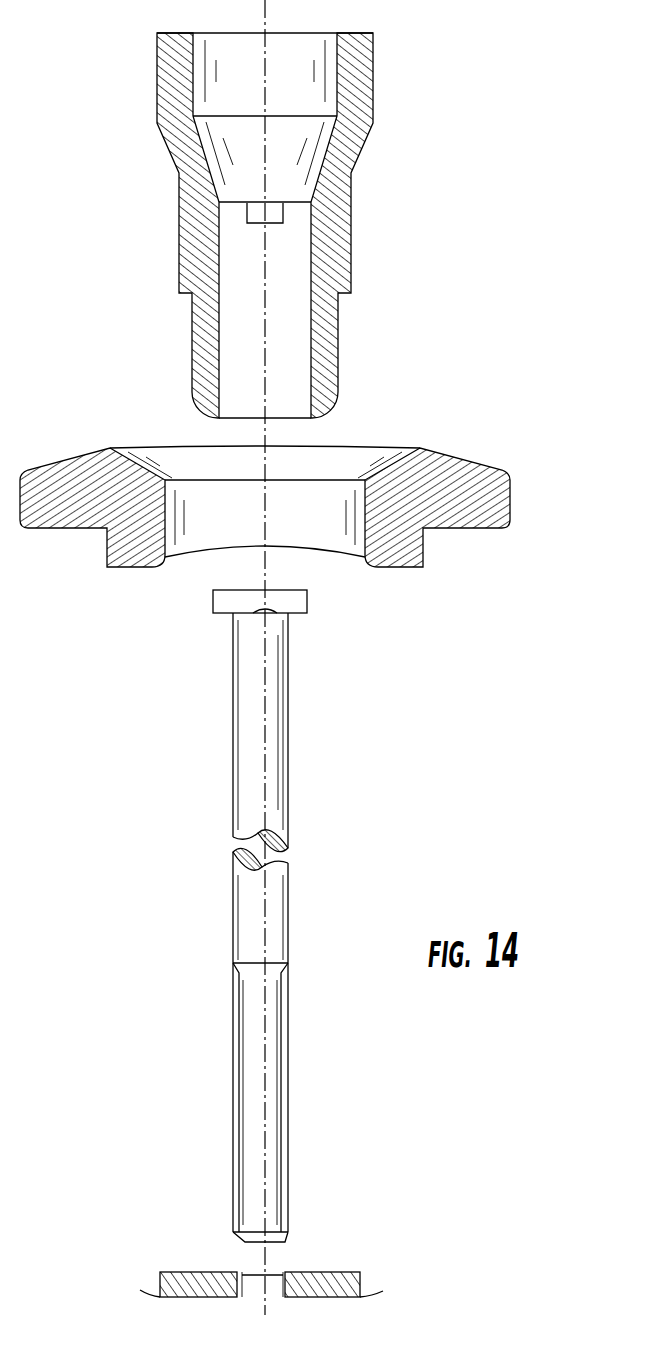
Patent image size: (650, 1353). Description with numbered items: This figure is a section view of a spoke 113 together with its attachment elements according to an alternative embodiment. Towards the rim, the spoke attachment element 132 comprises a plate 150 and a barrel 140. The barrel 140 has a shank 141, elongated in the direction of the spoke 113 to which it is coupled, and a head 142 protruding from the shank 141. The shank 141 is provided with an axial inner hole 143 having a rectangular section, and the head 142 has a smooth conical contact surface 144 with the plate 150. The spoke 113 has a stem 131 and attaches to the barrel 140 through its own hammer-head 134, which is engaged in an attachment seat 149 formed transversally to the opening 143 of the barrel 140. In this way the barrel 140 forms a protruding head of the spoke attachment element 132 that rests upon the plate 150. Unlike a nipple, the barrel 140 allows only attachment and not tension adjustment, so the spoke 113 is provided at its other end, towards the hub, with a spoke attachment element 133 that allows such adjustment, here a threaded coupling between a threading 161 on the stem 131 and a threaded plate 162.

The spoke 113 is at (233, 916).
The stem 131 is at (273, 778).
The spoke attachment element 132 is at (319, 223).
The spoke attachment element 133 is at (205, 1238).
The hammer-head 134 is at (298, 601).
The barrel 140 is at (347, 350).
The shank 141 is at (332, 235).
The head 142 is at (362, 57).
The axial inner hole 143 is at (222, 348).
The smooth conical contact surface 144 is at (362, 150).
The attachment seat 149 is at (257, 213).
The plate 150 is at (477, 462).
The threading 161 is at (233, 1037).
The threaded plate 162 is at (160, 1297).